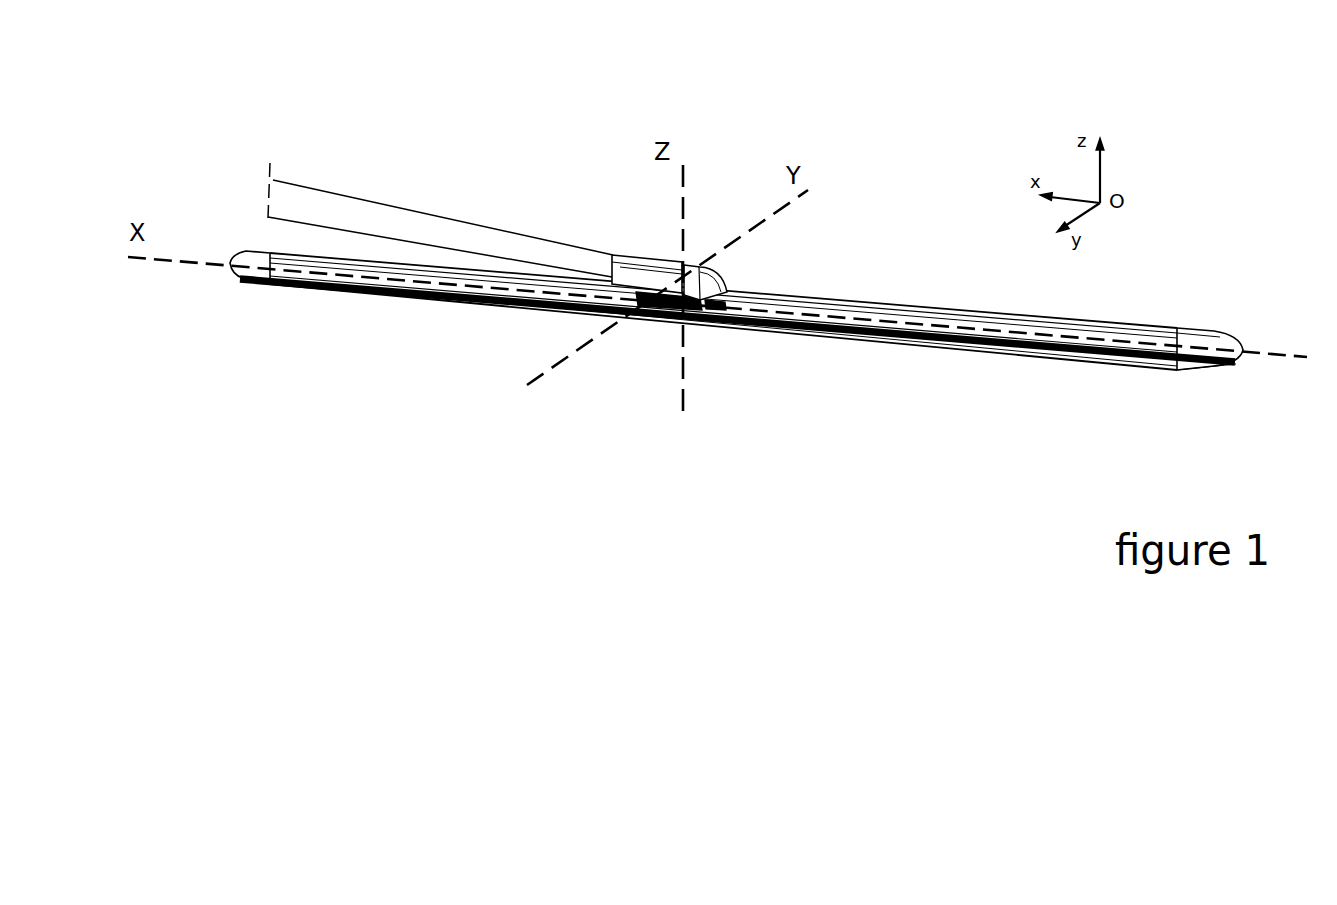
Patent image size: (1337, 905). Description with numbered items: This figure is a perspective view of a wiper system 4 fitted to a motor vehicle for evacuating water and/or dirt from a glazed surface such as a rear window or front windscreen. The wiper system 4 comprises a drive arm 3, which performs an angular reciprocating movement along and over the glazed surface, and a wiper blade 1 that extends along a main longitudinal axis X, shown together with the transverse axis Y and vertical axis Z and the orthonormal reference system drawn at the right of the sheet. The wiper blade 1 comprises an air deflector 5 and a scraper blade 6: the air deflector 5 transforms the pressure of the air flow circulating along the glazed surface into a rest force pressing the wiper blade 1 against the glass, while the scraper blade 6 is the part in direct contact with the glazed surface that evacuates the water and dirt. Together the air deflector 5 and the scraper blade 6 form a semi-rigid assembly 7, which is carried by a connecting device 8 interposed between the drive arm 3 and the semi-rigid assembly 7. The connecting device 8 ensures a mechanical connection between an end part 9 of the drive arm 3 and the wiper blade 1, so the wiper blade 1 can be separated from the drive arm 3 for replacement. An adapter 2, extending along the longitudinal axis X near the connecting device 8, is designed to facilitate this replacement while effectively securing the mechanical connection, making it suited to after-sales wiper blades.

The wiper blade 1 is at (870, 290).
The adapter 2 is at (712, 266).
The drive arm 3 is at (300, 178).
The wiper system 4 is at (598, 146).
The air deflector 5 is at (398, 268).
The scraper blade 6 is at (483, 310).
The semi-rigid assembly 7 is at (960, 368).
The connecting device 8 is at (716, 342).
The end part 9 is at (603, 278).